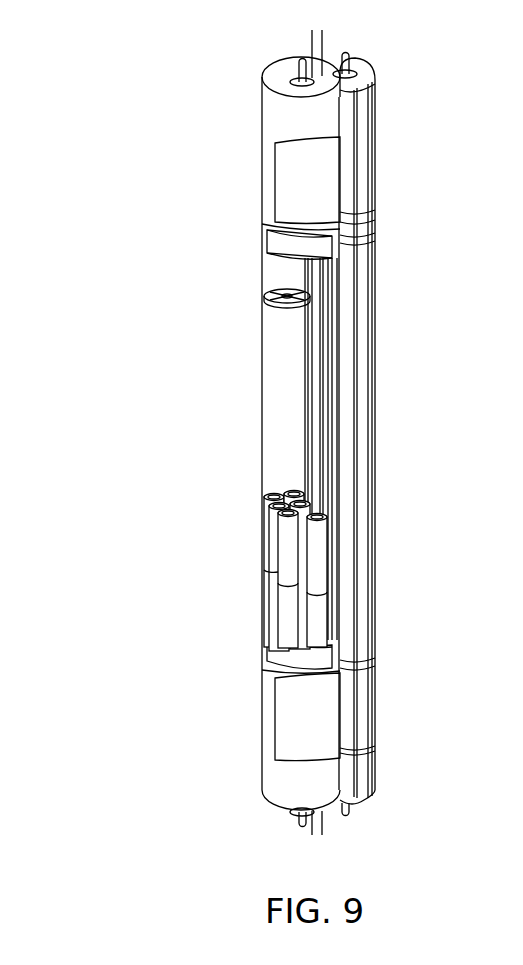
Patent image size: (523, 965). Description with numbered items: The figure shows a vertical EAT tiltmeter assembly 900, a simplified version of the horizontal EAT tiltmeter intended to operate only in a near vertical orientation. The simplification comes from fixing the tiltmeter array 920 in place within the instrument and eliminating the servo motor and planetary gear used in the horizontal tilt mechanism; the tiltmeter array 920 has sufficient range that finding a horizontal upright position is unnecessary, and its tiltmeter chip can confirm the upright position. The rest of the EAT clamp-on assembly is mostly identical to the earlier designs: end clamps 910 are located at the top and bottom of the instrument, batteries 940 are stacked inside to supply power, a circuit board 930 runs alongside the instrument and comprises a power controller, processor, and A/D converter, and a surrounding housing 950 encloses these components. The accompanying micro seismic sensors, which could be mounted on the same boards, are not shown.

The vertical EAT tiltmeter assembly 900 is at (177, 60).
The end clamps 910 is at (228, 143).
The tiltmeter array 920 is at (264, 297).
The circuit board 930 is at (347, 383).
The batteries 940 is at (272, 552).
The surrounding housing 950 is at (262, 408).